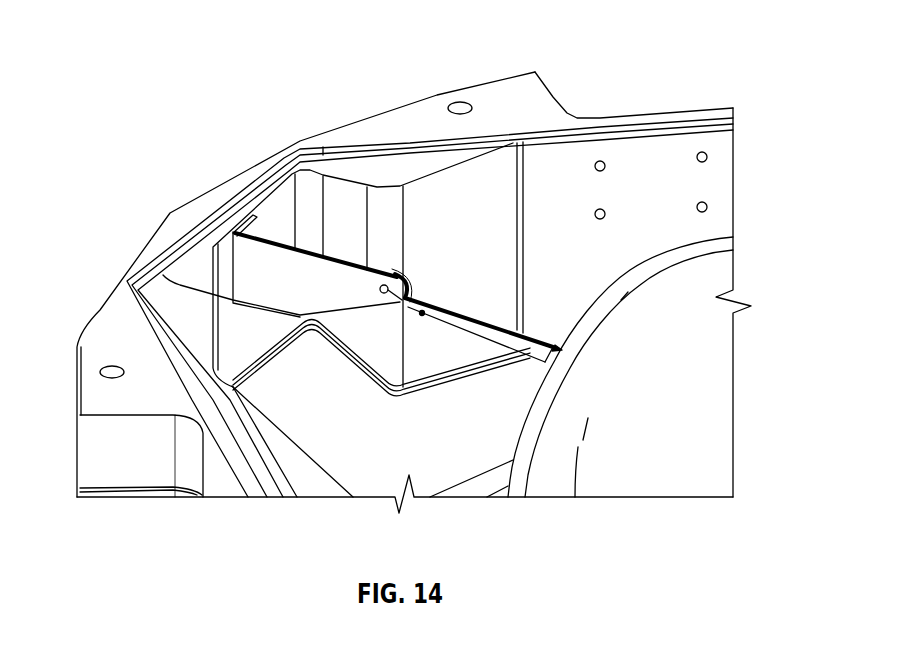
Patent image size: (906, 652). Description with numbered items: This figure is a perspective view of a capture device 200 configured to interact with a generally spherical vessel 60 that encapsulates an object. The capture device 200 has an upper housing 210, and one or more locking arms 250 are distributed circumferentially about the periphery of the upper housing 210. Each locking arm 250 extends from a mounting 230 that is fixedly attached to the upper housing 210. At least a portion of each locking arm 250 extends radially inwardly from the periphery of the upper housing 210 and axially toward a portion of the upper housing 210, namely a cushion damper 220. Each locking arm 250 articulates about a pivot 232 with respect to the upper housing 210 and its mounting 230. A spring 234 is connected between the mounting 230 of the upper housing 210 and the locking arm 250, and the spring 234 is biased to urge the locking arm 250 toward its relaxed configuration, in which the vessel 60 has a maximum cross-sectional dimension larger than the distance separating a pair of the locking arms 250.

The capture device 200 is at (106, 78).
The upper housing 210 is at (535, 72).
The cushion damper 220 is at (473, 487).
The mounting 230 is at (343, 314).
The pivot 232 is at (384, 294).
The spring 234 is at (408, 300).
The locking arm 250 is at (466, 323).
The vessel 60 is at (723, 362).